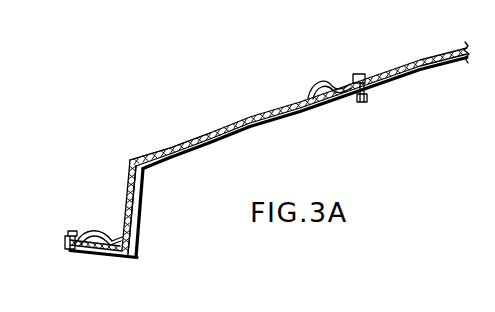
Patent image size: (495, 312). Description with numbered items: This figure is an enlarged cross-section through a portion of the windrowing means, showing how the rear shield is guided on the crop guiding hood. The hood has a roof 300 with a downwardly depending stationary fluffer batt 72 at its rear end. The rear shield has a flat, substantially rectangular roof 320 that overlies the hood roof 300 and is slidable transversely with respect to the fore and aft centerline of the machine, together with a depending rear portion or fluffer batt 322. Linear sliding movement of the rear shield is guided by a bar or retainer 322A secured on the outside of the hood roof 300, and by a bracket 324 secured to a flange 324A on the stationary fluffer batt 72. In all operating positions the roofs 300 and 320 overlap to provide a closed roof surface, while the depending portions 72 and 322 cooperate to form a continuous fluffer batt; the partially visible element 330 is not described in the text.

The roof 300 is at (276, 125).
The roof 320 is at (230, 125).
The fluffer batt 322 is at (127, 196).
The stationary fluffer batt 72 is at (146, 218).
The bracket 324 is at (99, 229).
The flange 324A is at (104, 256).
The retainer 322A is at (331, 78).
The support 330 is at (400, 309).